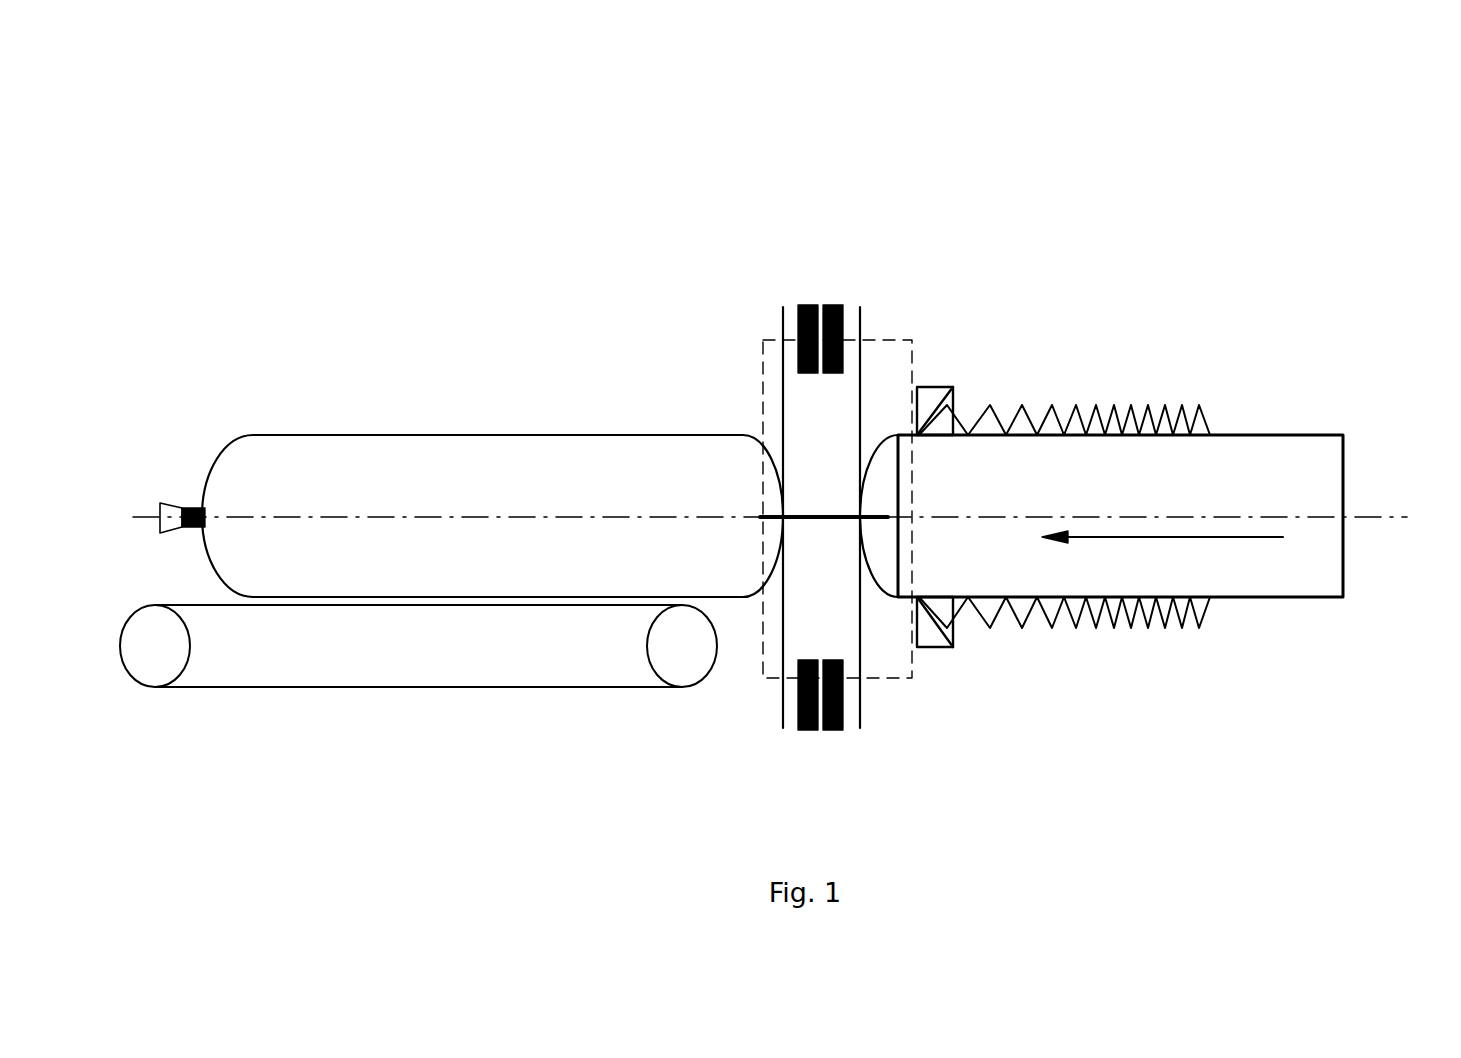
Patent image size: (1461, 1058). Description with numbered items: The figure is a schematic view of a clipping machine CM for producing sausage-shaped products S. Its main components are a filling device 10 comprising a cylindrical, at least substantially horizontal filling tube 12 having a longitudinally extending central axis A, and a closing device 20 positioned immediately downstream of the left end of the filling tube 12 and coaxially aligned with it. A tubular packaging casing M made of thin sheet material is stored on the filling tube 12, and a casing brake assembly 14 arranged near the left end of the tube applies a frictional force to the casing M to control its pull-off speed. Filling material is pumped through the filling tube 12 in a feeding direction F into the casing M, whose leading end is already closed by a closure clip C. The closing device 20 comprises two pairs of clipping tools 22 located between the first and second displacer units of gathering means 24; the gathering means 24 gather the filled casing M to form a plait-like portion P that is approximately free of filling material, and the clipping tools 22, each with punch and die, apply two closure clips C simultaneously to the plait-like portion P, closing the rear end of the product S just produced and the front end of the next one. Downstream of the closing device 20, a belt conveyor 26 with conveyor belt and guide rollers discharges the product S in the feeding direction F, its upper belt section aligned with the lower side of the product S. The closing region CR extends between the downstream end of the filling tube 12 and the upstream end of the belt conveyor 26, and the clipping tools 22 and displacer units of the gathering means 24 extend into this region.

The filling device 10 is at (1101, 433).
The filling tube 12 is at (1313, 433).
The casing brake assembly 14 is at (918, 433).
The closing device 20 is at (791, 483).
The clipping tools 22 is at (802, 307).
The gathering means 24 is at (785, 420).
The belt conveyor 26 is at (445, 647).
The central axis A is at (1400, 522).
The closure clip C is at (182, 508).
The sausage-shaped product S is at (456, 461).
The closing region CR is at (766, 428).
The plait-like portion P is at (815, 515).
The tubular packaging casing M is at (1155, 407).
The feeding direction F is at (1162, 553).
The clipping machine CM is at (1101, 366).